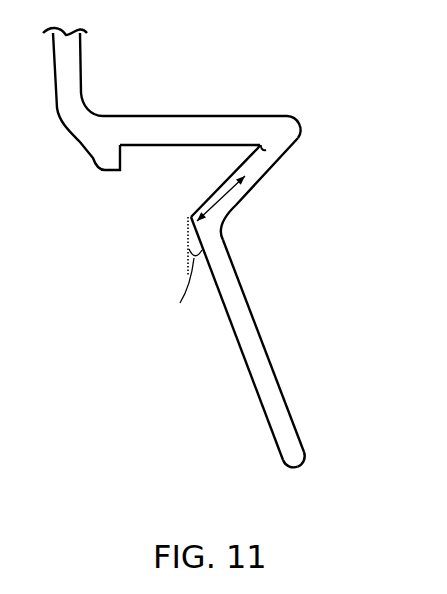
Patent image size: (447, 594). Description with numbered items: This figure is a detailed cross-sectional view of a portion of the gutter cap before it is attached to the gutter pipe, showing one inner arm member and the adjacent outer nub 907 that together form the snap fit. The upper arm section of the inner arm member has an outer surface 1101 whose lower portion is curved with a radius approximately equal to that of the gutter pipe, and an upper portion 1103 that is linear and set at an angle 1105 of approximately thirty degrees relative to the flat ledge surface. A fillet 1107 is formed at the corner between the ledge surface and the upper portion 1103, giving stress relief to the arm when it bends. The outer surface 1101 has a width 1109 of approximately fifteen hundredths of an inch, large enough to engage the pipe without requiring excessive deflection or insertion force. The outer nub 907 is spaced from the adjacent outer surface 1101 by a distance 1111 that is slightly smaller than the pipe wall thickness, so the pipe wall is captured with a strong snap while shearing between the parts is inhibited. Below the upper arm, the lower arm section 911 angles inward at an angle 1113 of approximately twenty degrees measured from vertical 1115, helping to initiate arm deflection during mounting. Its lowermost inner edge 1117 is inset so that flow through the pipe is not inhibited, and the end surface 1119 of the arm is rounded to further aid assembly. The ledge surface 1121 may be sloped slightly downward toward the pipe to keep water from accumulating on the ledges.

The outer nub 907 is at (105, 163).
The lower arm section 911 is at (257, 362).
The outer surface of upper arm section 1101 is at (201, 192).
The upper portion of upper arm section 1103 is at (262, 160).
The angle 1105 is at (258, 150).
The fillet 1107 is at (274, 144).
The width 1109 is at (224, 206).
The distance 1111 is at (180, 212).
The angle 1113 is at (162, 287).
The vertical 1115 is at (181, 246).
The lowermost inner edge 1117 is at (276, 468).
The end surface 1119 is at (298, 475).
The surface 1121 is at (215, 108).